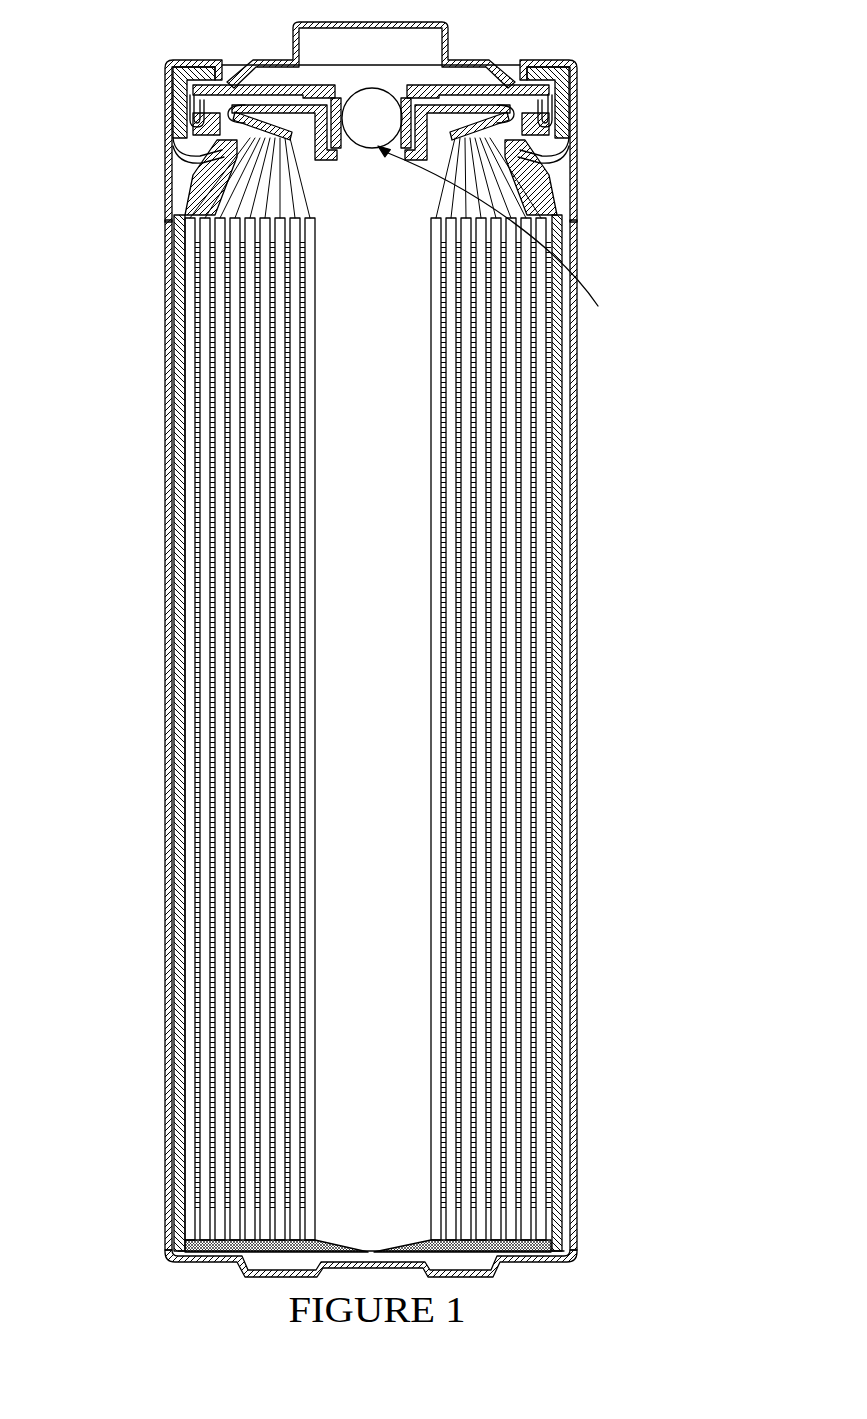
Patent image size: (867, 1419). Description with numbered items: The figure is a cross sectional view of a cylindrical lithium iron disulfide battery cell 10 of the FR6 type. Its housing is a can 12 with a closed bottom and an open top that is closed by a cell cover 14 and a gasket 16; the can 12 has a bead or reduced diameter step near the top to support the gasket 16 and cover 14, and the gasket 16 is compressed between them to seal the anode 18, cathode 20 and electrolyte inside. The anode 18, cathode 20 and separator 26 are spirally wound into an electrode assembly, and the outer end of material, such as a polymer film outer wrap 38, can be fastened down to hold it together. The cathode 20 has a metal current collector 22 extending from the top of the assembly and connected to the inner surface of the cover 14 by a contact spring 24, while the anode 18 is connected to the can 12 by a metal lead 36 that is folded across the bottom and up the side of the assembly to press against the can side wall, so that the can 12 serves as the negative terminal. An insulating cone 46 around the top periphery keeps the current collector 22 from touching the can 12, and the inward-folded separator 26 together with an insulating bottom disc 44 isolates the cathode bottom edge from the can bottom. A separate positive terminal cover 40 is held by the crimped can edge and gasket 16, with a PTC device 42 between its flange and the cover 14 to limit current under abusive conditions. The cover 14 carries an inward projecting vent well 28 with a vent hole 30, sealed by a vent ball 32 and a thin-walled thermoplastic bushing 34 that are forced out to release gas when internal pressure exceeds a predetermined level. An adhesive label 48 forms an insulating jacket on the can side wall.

The cell 10 is at (367, 644).
The can 12 is at (283, 1273).
The cell cover 14 is at (562, 107).
The gasket 16 is at (183, 134).
The anode 18 is at (503, 433).
The cathode 20 is at (478, 412).
The cathode current collector 22 is at (472, 163).
The contact spring 24 is at (547, 89).
The separator 26 is at (455, 185).
The vent well 28 is at (523, 117).
The vent hole 30 is at (502, 237).
The vent ball 32 is at (378, 107).
The bushing 34 is at (422, 100).
The lead 36 is at (568, 800).
The outer wrap 38 is at (560, 606).
The positive terminal cover 40 is at (292, 72).
The positive temperature coefficient (PTC) device 42 is at (208, 80).
The bottom disc 44 is at (466, 1252).
The insulating cone 46 is at (202, 188).
The adhesive label 48 is at (168, 307).